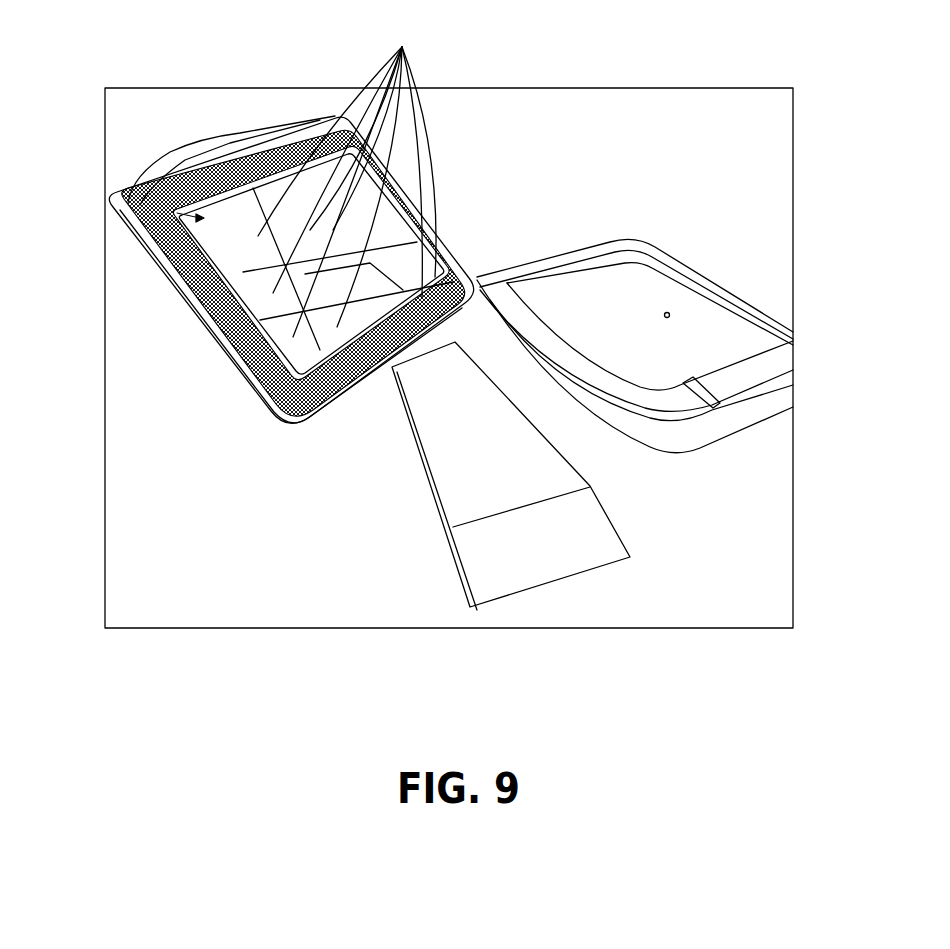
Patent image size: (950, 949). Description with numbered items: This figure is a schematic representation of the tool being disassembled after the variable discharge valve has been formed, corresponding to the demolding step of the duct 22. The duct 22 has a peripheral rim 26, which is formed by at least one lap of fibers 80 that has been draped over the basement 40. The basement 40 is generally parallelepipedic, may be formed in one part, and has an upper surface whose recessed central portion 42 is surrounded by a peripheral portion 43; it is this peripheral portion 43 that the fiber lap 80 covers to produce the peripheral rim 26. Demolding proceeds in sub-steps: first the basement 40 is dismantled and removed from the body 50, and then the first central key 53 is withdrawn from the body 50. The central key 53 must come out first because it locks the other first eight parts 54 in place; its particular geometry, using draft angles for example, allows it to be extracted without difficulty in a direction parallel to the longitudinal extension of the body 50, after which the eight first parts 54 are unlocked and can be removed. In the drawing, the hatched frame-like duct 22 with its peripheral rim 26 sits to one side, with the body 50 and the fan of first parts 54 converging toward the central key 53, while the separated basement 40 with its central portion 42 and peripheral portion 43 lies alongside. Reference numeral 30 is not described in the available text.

The duct 22 is at (221, 337).
The peripheral rim 26 is at (240, 393).
The outer cover 30 is at (133, 200).
The basement 40 is at (680, 403).
The central portion 42 is at (660, 328).
The peripheral portion 43 is at (657, 413).
The body 50 is at (252, 186).
The first central key 53 is at (507, 482).
The first eight parts 54 is at (347, 179).
The lap of fibers 80 is at (183, 292).